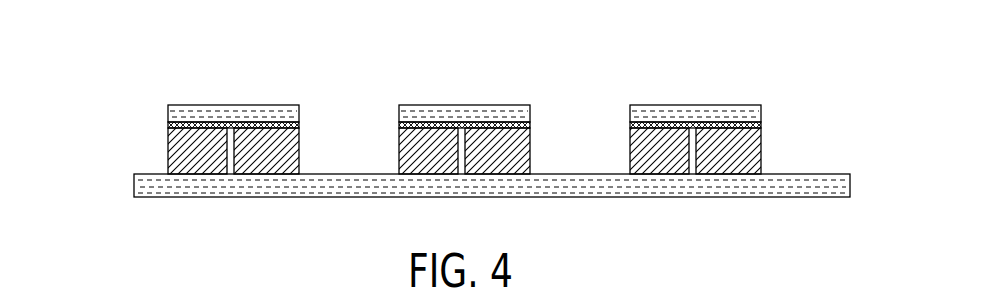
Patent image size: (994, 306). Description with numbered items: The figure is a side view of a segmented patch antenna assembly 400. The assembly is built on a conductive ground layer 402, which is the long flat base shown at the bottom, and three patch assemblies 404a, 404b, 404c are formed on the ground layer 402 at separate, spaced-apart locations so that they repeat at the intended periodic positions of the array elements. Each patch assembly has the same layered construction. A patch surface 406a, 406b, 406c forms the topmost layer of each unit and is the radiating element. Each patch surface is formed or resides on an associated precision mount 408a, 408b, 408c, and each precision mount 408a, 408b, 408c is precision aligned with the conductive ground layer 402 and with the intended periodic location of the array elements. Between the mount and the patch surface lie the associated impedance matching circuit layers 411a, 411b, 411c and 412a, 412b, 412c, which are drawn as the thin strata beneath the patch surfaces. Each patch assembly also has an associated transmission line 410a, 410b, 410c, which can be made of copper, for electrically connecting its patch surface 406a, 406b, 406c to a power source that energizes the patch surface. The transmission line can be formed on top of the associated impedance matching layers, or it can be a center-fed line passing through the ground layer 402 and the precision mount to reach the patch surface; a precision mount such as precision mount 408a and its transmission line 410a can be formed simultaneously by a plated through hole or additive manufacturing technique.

The segmented patch antenna assembly 400 is at (95, 112).
The conductive ground layer 402 is at (852, 183).
The patch assembly 404a is at (241, 143).
The patch assembly 404b is at (472, 143).
The patch assembly 404c is at (703, 143).
The patch surface 406a is at (288, 110).
The patch surface 406b is at (519, 110).
The patch surface 406c is at (750, 110).
The precision mount 408a is at (290, 147).
The precision mount 408b is at (521, 147).
The precision mount 408c is at (752, 147).
The transmission line 410a is at (247, 127).
The transmission line 410b is at (478, 127).
The transmission line 410c is at (709, 127).
The impedance matching circuit layer 411a is at (197, 124).
The impedance matching circuit layer 411b is at (428, 124).
The impedance matching circuit layer 411c is at (659, 124).
The impedance matching circuit layer 412a is at (208, 126).
The impedance matching circuit layer 412b is at (439, 126).
The impedance matching circuit layer 412c is at (670, 126).